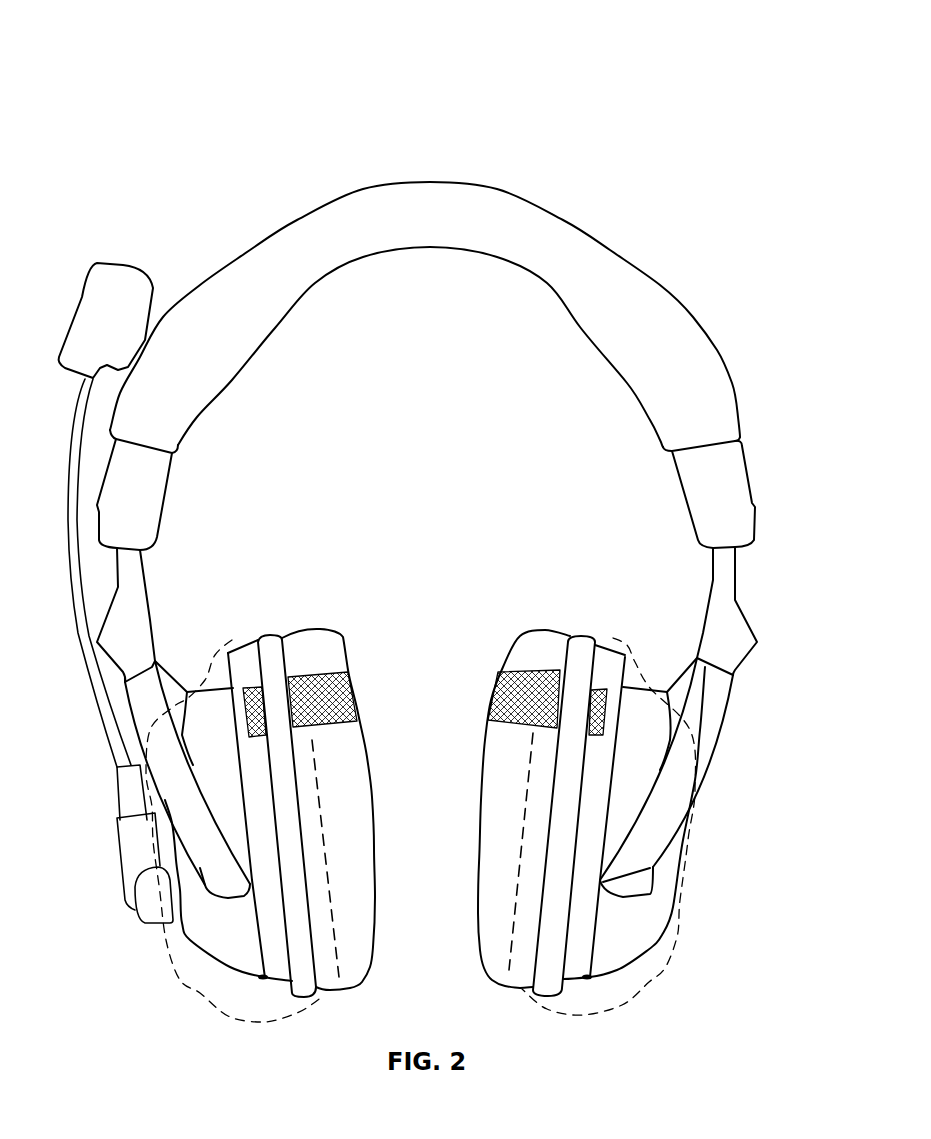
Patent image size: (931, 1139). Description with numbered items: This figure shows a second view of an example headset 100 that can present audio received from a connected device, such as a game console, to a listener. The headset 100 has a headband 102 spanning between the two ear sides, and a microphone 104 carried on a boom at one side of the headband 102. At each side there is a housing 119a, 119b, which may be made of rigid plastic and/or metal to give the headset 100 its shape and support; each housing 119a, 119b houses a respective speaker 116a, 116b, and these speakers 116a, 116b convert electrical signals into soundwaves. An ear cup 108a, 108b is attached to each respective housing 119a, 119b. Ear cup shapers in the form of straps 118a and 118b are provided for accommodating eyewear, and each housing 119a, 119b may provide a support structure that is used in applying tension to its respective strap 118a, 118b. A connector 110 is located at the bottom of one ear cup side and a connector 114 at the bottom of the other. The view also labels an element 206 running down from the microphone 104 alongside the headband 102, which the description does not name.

The headset 100 is at (104, 86).
The headband 102 is at (597, 222).
The microphone 104 is at (78, 317).
The microphone cable 206 is at (73, 548).
The ear cup 108a is at (337, 620).
The ear cup 108b is at (540, 631).
The strap 118a is at (315, 668).
The strap 118b is at (557, 680).
The housing 119a is at (273, 625).
The housing 119b is at (613, 638).
The speaker 116a is at (392, 758).
The speaker 116b is at (470, 727).
The connector 110 is at (263, 979).
The connector 114 is at (587, 979).